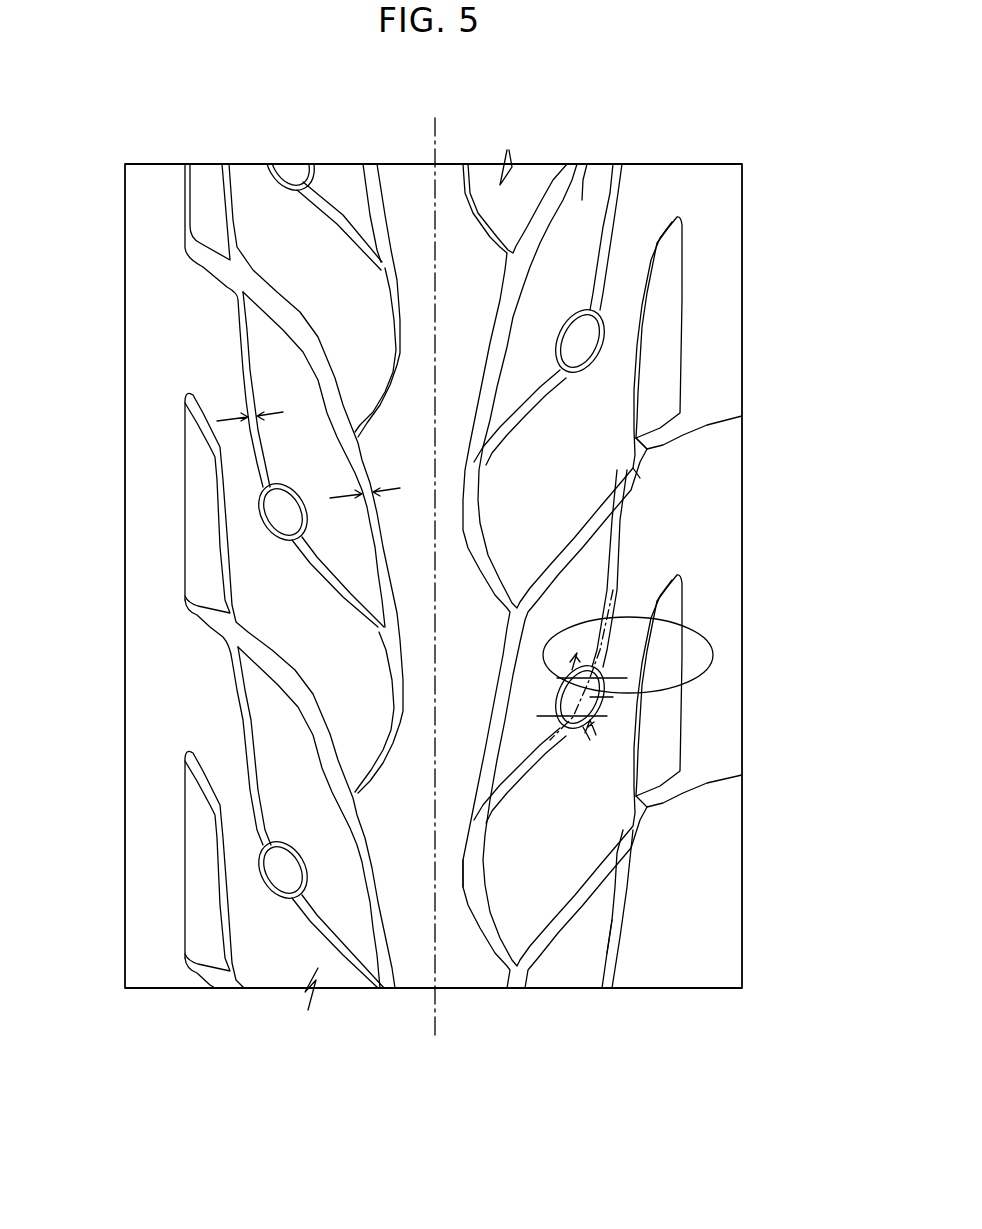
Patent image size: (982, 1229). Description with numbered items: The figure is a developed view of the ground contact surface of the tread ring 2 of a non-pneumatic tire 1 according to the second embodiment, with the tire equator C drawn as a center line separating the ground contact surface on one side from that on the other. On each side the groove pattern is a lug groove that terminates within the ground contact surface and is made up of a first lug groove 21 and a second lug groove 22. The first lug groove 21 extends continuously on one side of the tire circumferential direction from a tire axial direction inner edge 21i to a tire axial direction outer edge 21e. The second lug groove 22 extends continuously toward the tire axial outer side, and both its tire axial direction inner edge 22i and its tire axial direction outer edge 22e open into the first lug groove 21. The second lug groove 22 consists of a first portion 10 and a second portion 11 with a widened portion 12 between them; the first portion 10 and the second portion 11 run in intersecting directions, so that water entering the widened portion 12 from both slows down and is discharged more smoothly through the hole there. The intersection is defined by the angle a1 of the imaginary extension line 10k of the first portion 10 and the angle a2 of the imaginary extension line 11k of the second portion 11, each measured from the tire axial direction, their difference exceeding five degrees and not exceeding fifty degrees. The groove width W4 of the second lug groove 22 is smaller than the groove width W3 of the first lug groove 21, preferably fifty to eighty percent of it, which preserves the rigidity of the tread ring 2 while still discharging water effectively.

The non-pneumatic tire 1 is at (732, 120).
The tread ring 2 is at (587, 164).
The first portion 10 is at (540, 400).
The imaginary extension line 10k is at (583, 727).
The second portion 11 is at (625, 193).
The imaginary extension line 11k is at (600, 700).
The widened portion 12 is at (607, 317).
The first lug groove 21 is at (375, 552).
The tire axial direction outer edge 21e is at (673, 420).
The tire axial direction inner edge 21i is at (462, 890).
The second lug groove 22 is at (243, 378).
The tire axial direction outer edge 22e is at (640, 468).
The tire axial direction inner edge 22i is at (592, 887).
The groove width W3 is at (366, 493).
The groove width W4 is at (248, 417).
The angle a1 is at (607, 712).
The angle a2 is at (713, 622).
The tire equator C is at (432, 562).